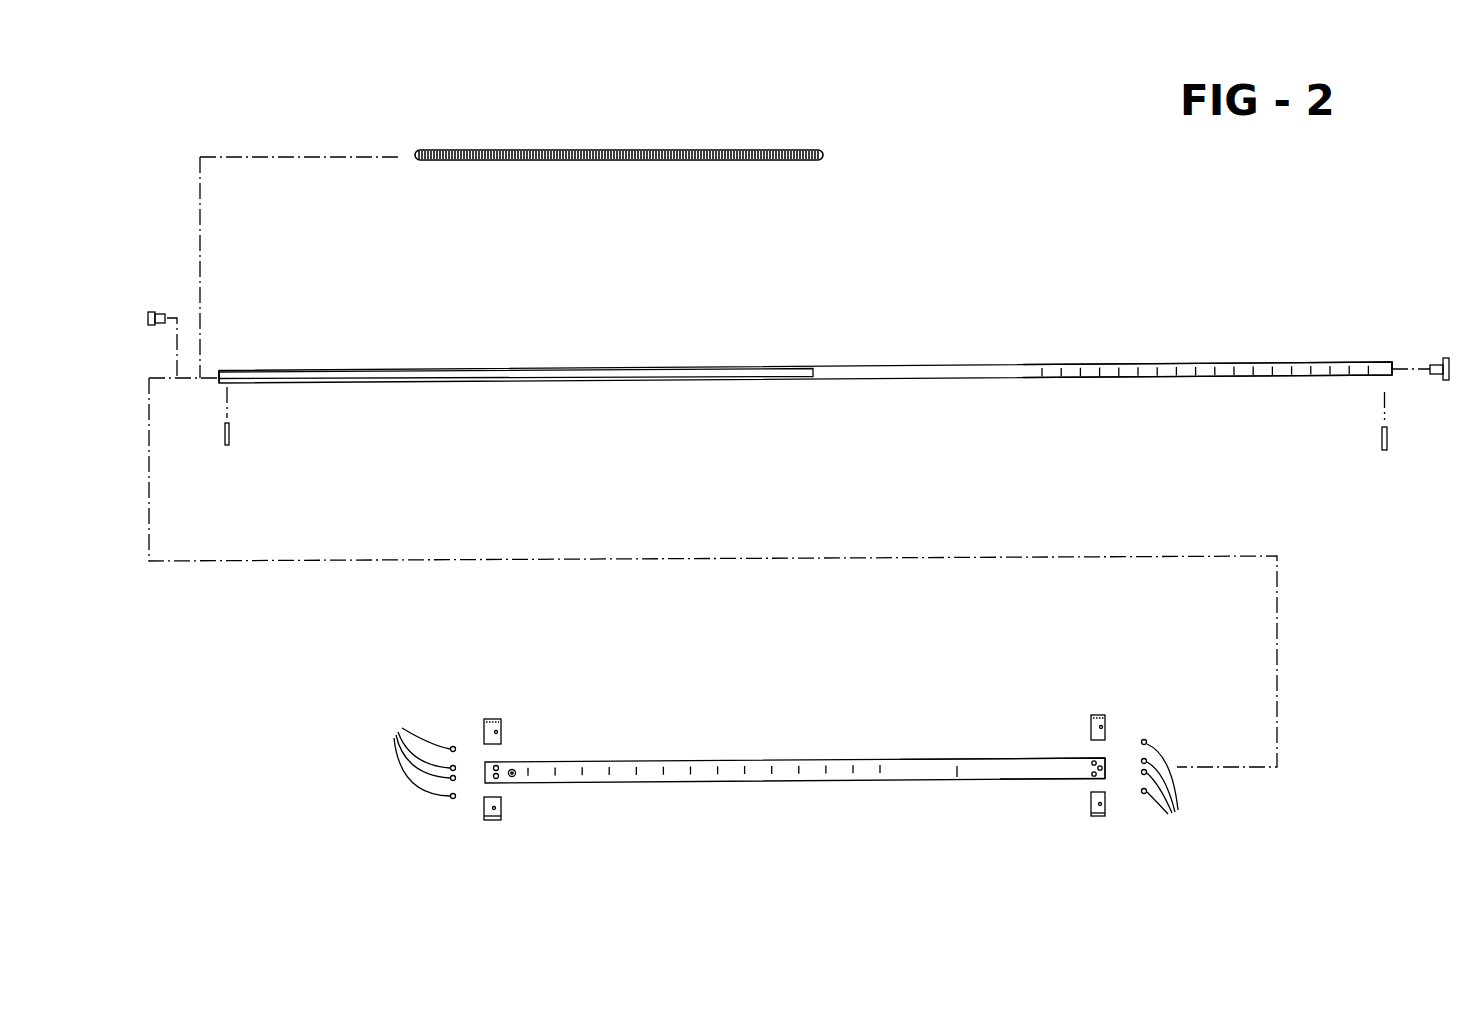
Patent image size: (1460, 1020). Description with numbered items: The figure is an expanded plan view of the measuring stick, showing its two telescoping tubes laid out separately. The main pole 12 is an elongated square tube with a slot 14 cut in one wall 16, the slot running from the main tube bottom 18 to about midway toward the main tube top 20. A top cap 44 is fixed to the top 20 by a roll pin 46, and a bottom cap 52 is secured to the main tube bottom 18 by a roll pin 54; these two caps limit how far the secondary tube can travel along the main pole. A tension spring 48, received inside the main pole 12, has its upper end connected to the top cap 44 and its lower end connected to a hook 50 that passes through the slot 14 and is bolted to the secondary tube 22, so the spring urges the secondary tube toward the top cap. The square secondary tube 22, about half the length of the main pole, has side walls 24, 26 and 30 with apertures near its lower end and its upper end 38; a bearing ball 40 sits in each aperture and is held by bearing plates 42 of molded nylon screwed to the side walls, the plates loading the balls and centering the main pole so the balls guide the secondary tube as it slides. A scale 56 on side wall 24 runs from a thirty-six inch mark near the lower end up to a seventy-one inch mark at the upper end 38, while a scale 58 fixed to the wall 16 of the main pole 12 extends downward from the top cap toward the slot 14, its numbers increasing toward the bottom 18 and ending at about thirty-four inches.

The main pole 12 is at (860, 367).
The slot 14 is at (597, 377).
The wall 16 is at (1023, 368).
The main tube bottom 18 is at (220, 370).
The main tube top 20 is at (1397, 362).
The secondary tube 22 is at (812, 782).
The side wall 24 is at (957, 772).
The side wall 26 is at (1035, 777).
The side wall 30 is at (985, 758).
The upper end 38 is at (1105, 758).
The bearing ball 40 is at (794, 772).
The bearing plate 42 is at (486, 719).
The top cap 44 is at (1438, 360).
The roll pin 46 is at (1382, 440).
The tension spring 48 is at (633, 150).
The hook 50 is at (512, 777).
The bottom cap 52 is at (163, 312).
The roll pin 54 is at (230, 437).
The scale 56 is at (557, 770).
The scale 58 is at (1197, 370).